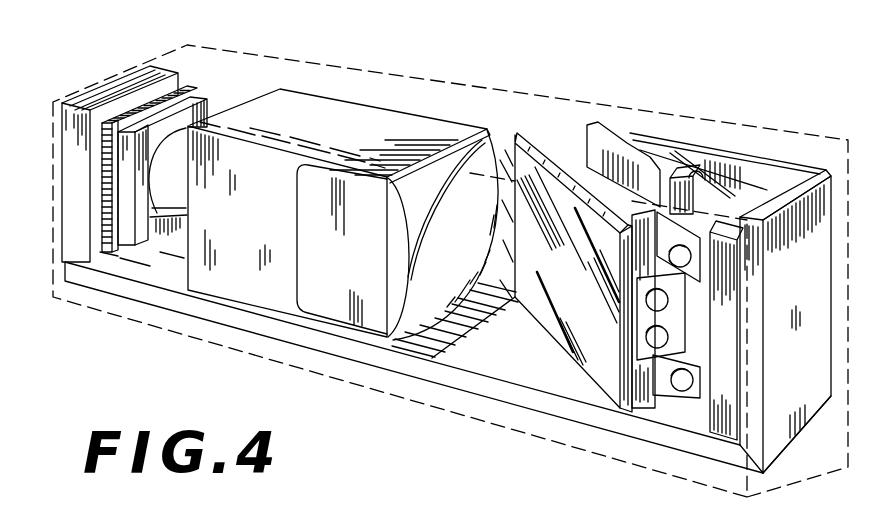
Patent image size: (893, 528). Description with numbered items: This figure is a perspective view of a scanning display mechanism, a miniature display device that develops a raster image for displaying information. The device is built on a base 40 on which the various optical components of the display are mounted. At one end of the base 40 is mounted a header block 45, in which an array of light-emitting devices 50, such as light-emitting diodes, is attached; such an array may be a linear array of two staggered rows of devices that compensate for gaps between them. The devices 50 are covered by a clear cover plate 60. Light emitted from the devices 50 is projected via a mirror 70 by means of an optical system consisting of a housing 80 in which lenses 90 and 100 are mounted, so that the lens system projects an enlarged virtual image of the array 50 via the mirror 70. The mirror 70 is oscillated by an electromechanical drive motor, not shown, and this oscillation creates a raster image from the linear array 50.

The base 40 is at (229, 313).
The header block 45 is at (78, 248).
The array of light-emitting devices 50 is at (155, 102).
The clear cover plate 60 is at (202, 114).
The mirror 70 is at (555, 312).
The housing 80 is at (325, 113).
The lens 90 is at (176, 228).
The lens 100 is at (483, 162).